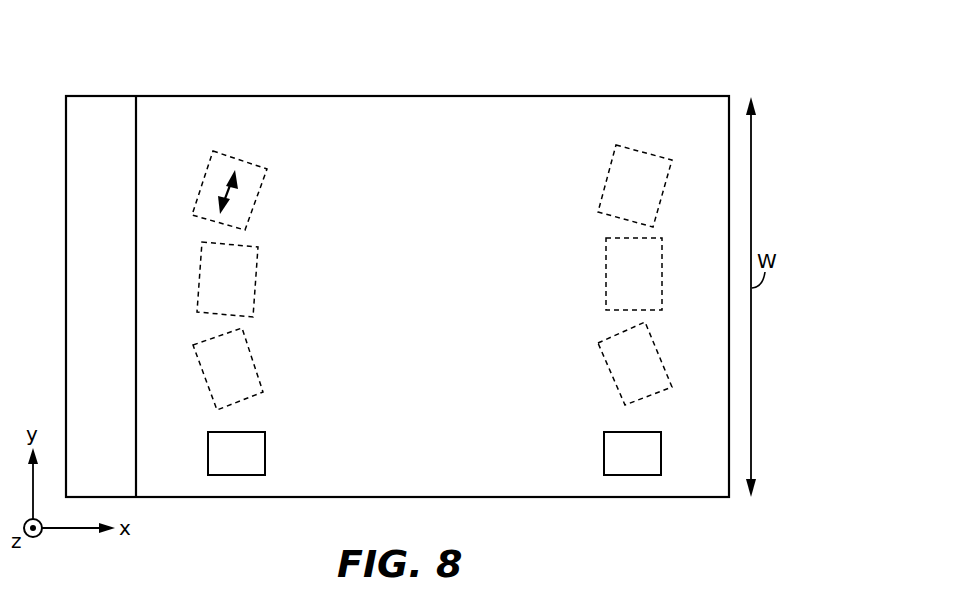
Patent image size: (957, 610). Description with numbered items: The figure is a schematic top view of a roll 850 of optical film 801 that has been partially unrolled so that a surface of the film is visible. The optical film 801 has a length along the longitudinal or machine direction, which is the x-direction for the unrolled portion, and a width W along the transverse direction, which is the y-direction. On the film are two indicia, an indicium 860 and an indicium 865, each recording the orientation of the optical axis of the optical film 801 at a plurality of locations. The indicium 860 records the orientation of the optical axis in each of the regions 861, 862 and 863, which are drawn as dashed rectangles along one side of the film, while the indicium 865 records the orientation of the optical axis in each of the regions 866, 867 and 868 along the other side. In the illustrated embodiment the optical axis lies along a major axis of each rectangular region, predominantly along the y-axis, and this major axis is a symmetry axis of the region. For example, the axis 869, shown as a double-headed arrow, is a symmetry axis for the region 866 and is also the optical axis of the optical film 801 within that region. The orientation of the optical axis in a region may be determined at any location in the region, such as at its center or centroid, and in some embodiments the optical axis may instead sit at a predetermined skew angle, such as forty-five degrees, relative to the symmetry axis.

The optical film 801 is at (469, 157).
The roll 850 is at (97, 117).
The indicium 860 is at (637, 458).
The region 861 is at (623, 183).
The region 862 is at (628, 277).
The region 863 is at (628, 374).
The indicium 865 is at (233, 458).
The region 866 is at (247, 178).
The region 867 is at (237, 273).
The region 868 is at (230, 362).
The axis 869 is at (225, 188).